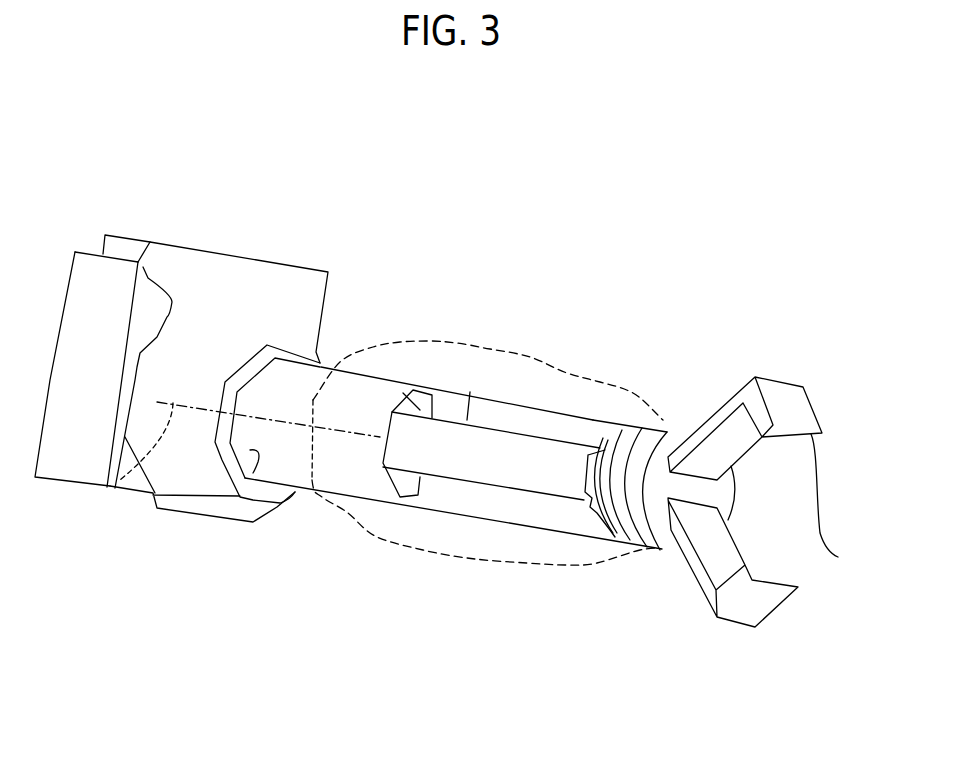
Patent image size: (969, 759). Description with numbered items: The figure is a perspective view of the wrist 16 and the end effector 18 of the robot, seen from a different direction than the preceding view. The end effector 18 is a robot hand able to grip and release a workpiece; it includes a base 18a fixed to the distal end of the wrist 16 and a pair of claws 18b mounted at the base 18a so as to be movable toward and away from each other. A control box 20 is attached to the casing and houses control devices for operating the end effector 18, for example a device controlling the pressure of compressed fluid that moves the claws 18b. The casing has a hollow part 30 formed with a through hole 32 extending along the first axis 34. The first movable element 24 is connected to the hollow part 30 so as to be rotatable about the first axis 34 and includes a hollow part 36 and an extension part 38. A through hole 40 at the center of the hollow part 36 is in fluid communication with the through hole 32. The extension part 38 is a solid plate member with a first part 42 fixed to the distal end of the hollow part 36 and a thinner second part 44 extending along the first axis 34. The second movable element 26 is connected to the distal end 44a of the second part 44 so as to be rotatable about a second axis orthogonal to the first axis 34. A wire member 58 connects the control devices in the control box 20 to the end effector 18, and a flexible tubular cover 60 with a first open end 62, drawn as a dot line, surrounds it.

The wrist 16 is at (488, 245).
The end effector 18 is at (752, 616).
The base 18a is at (657, 550).
The claws 18b is at (775, 570).
The control box 20 is at (78, 312).
The first movable element 24 is at (410, 528).
The second movable element 26 is at (598, 433).
The hollow part 30 is at (192, 489).
The through hole 32 is at (228, 250).
The first axis 34 is at (119, 497).
The hollow part 36 is at (348, 482).
The extension part 38 is at (515, 535).
The through hole 40 is at (405, 390).
The first part 42 is at (455, 478).
The second part 44 is at (547, 512).
The distal end 44a is at (610, 542).
The wire member 58 is at (450, 442).
The cover 60 is at (538, 358).
The first open end 62 is at (308, 398).